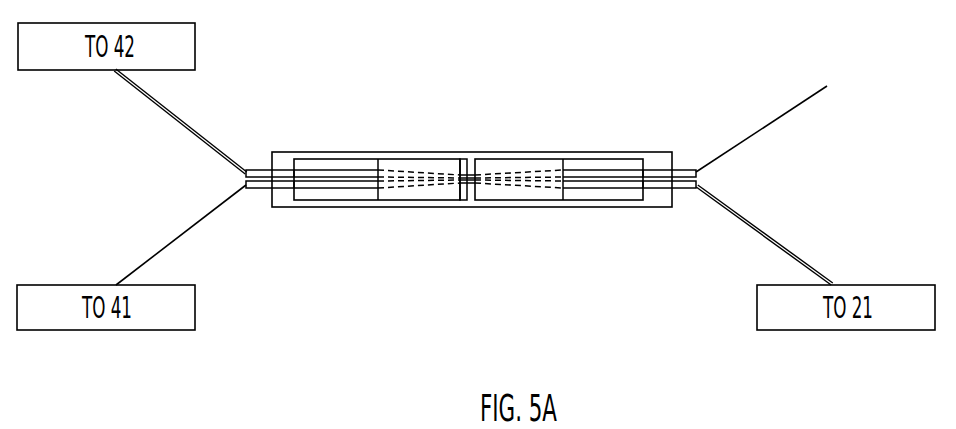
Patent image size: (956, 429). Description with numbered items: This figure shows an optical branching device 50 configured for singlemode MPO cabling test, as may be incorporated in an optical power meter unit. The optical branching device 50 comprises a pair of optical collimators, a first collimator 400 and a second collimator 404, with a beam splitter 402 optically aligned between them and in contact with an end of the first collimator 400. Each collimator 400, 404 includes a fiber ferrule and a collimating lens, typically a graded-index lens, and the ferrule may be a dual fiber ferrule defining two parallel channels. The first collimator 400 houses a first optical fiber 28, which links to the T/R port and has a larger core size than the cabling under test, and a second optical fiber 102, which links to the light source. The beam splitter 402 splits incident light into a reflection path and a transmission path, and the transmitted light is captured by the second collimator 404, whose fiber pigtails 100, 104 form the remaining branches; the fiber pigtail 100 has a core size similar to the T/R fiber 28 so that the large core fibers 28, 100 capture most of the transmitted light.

The optical branching device 50 is at (471, 140).
The first optical fiber 28 is at (182, 121).
The second optical fiber 102 is at (173, 241).
The fiber pigtail 104 is at (747, 138).
The fiber pigtail 100 is at (740, 218).
The first collimator 400 is at (399, 165).
The beam splitter 402 is at (465, 207).
The second collimator 404 is at (551, 165).